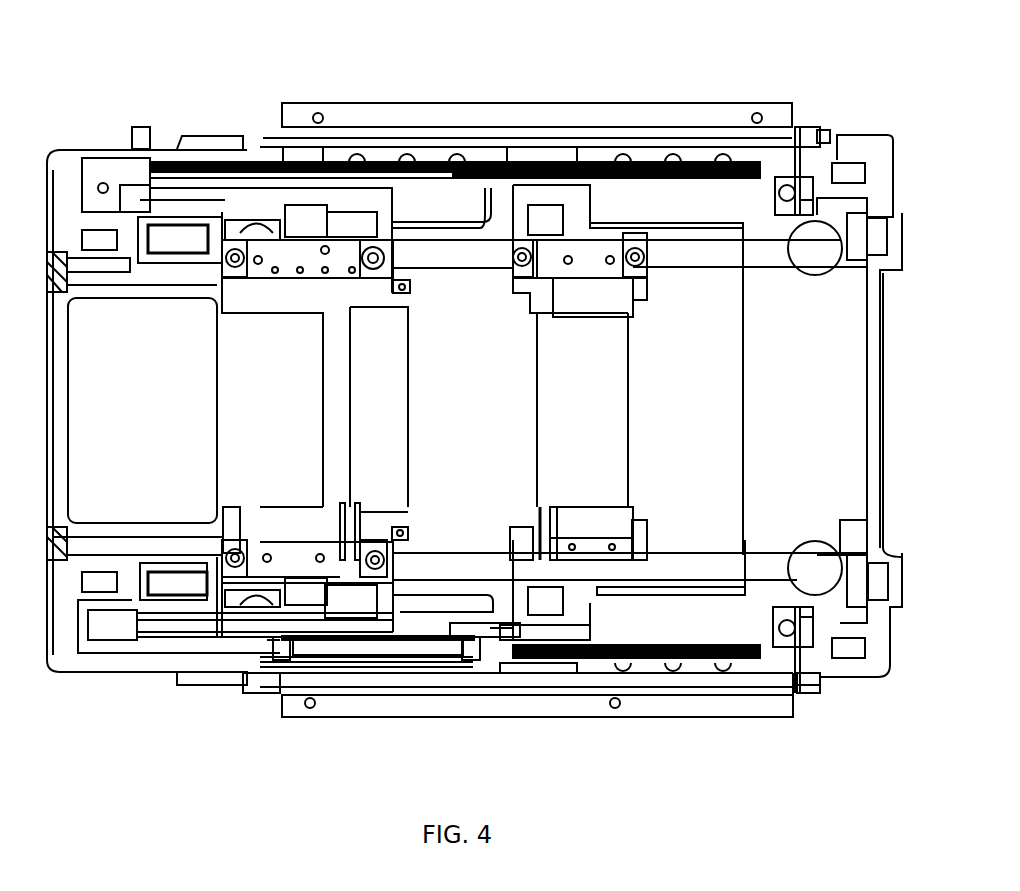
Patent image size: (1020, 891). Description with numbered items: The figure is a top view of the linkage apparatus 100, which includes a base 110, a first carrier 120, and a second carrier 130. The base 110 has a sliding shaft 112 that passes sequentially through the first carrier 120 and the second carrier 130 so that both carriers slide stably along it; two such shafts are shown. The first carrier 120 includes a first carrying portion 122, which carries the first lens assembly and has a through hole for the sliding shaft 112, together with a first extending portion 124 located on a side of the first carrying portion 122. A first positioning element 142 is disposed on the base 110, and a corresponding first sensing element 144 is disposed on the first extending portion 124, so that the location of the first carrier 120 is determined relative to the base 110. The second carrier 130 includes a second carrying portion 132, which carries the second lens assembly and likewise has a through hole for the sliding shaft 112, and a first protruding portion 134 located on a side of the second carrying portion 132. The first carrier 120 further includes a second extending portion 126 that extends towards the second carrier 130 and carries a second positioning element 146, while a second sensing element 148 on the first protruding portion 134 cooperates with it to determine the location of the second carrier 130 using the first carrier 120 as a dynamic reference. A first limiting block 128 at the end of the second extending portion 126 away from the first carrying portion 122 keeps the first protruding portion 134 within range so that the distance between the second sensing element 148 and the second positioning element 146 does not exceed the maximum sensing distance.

The linkage apparatus 100 is at (622, 70).
The base 110 is at (105, 170).
The sliding shaft 112 is at (763, 260).
The first carrier 120 is at (400, 322).
The first carrying portion 122 is at (380, 517).
The first extending portion 124 is at (245, 195).
The second extending portion 126 is at (318, 658).
The first limiting block 128 is at (523, 640).
The second carrier 130 is at (617, 335).
The second carrying portion 132 is at (607, 518).
The first protruding portion 134 is at (415, 623).
The first positioning element 142 is at (370, 165).
The first sensing element 144 is at (155, 150).
The second positioning element 146 is at (370, 647).
The second sensing element 148 is at (420, 640).